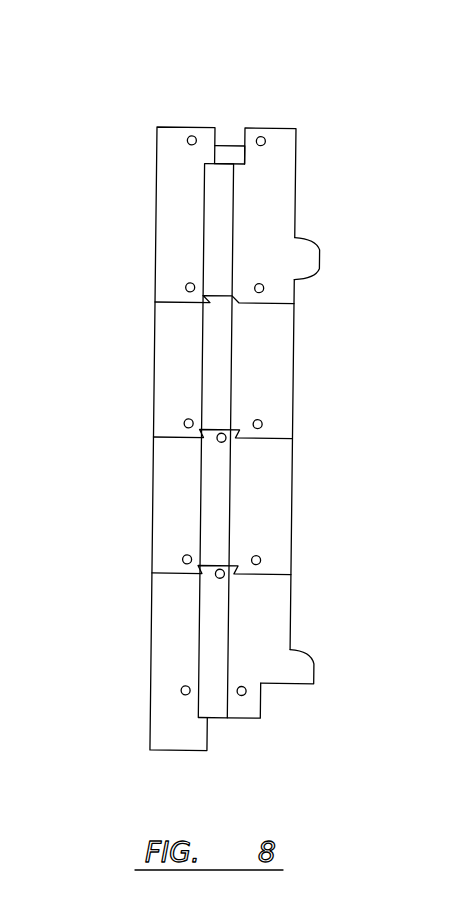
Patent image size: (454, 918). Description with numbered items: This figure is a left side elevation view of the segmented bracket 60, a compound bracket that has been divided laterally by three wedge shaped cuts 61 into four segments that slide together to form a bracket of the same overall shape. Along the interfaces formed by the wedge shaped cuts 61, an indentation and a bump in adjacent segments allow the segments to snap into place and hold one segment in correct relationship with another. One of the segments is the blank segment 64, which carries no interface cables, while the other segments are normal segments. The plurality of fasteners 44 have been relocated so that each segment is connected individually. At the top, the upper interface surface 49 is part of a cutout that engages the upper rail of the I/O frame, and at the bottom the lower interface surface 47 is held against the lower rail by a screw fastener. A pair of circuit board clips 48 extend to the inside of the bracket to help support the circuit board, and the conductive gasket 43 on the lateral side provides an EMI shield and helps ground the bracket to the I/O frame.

The segmented bracket 60 is at (221, 412).
The blank segment 64 is at (155, 393).
The conductive gasket 43 is at (212, 513).
The lower interface surface 47 is at (262, 706).
The upper interface surface 49 is at (225, 145).
The circuit board clips 48 is at (321, 268).
The fasteners 44 is at (260, 282).
The wedge shaped cuts 61 is at (267, 302).